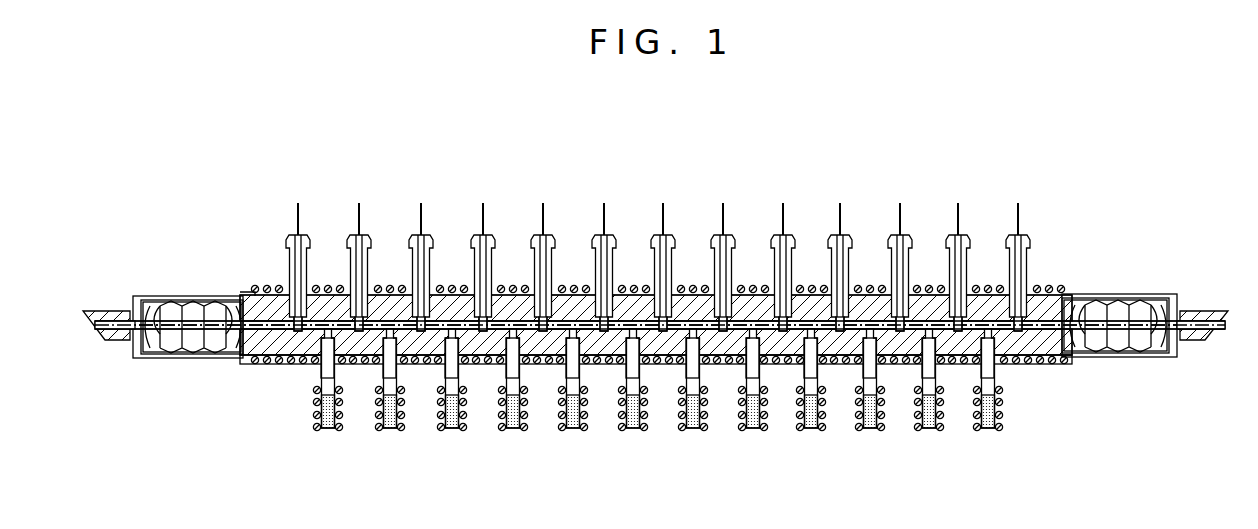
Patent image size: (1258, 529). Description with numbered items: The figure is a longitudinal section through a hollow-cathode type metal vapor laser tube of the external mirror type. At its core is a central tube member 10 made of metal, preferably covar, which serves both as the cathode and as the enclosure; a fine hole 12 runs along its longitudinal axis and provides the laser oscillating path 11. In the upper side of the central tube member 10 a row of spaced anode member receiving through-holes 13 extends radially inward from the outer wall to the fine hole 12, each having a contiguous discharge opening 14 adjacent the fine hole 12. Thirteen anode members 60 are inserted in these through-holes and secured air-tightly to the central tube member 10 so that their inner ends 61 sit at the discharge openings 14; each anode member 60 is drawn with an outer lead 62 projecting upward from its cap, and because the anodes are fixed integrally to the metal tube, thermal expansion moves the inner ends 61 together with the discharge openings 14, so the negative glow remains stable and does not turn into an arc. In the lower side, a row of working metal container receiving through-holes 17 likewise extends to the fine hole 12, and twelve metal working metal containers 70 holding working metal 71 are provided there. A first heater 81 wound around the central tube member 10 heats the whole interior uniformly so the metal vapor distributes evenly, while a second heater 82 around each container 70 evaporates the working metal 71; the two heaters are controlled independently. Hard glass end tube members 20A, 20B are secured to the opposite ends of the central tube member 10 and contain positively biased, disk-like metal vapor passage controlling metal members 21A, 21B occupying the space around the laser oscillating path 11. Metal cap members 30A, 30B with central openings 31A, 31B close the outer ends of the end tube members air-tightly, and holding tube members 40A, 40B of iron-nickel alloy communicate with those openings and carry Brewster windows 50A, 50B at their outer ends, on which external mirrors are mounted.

The central tube member 10 is at (560, 300).
The laser oscillating path 11 is at (792, 335).
The fine hole 12 is at (672, 300).
The anode member receiving through-holes 13 is at (290, 330).
The discharge opening 14 is at (275, 364).
The working metal container receiving through-holes 17 is at (320, 380).
The anode members 60 is at (299, 212).
The inner ends 61 is at (348, 365).
The lead wire 62 is at (290, 262).
The working metal containers 70 is at (320, 410).
The working metal 71 is at (328, 430).
The first heater 81 is at (643, 412).
The second heater 82 is at (378, 420).
The end tube member 20A is at (197, 300).
The end tube member 20B is at (1112, 300).
The metal vapor passage controlling metal members 21A is at (150, 358).
The metal vapor passage controlling metal members 21B is at (1090, 357).
The cap member 30A is at (134, 300).
The cap member 30B is at (1180, 300).
The opening 31A is at (158, 300).
The opening 31B is at (1160, 300).
The holding tube member 40A is at (105, 312).
The holding tube member 40B is at (1215, 312).
The Brewster window 50A is at (95, 328).
The Brewster window 50B is at (1200, 330).